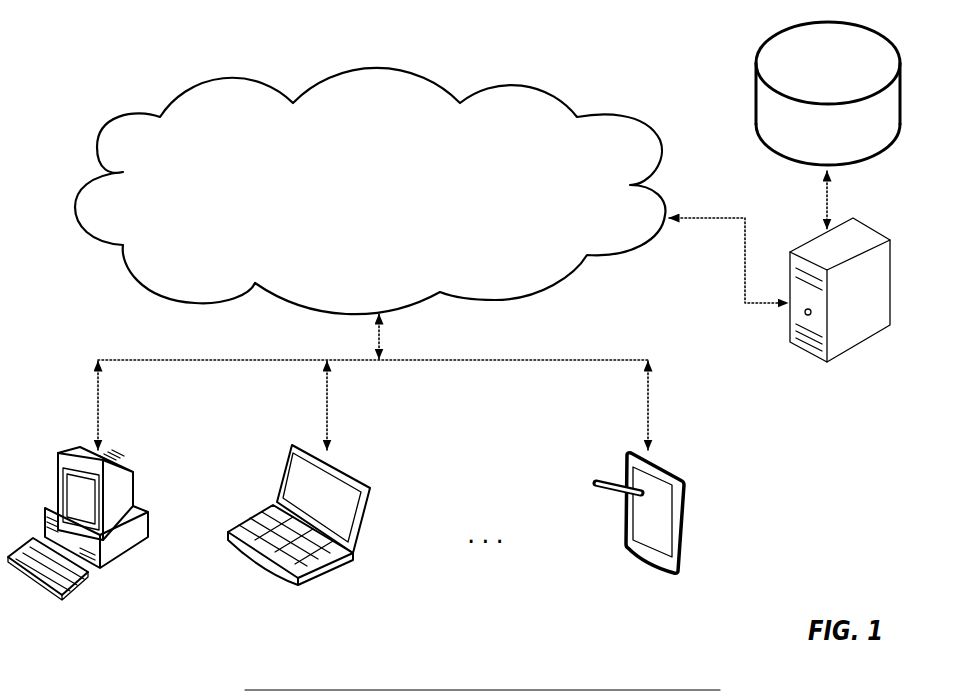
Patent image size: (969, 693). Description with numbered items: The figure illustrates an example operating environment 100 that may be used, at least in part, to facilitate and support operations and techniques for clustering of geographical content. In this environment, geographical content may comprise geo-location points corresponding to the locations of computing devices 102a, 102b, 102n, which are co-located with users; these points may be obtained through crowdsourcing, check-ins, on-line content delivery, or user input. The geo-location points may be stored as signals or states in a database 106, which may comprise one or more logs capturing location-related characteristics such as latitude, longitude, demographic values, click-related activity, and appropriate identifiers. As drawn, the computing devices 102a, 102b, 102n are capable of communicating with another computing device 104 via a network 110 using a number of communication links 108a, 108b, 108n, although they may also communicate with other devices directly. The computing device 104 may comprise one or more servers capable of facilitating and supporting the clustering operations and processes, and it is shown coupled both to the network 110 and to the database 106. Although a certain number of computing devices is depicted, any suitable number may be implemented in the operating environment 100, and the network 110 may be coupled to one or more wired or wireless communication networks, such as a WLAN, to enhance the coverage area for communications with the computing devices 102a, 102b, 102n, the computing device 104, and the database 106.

The operating environment 100 is at (88, 98).
The network 110 is at (350, 217).
The database 106 is at (809, 69).
The computing device 104 is at (848, 360).
The communication link 108a is at (103, 388).
The communication link 108b is at (332, 388).
The communication link 108n is at (652, 393).
The computing device 102a is at (80, 595).
The computing device 102b is at (302, 587).
The computing device 102n is at (680, 577).